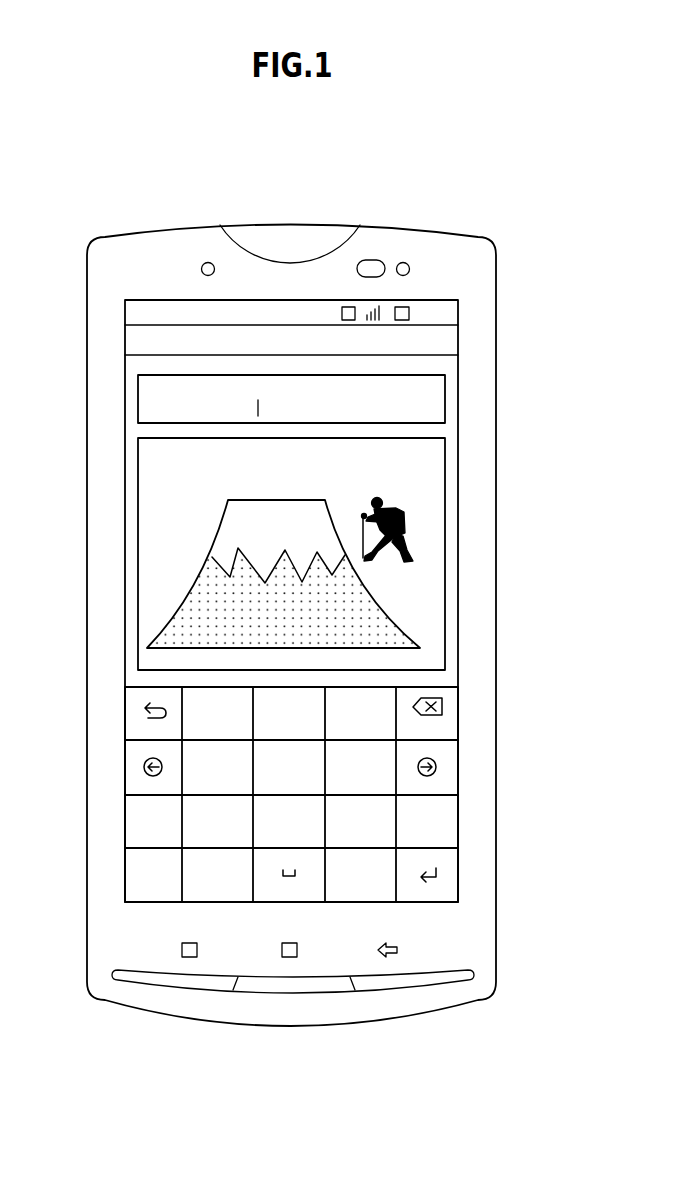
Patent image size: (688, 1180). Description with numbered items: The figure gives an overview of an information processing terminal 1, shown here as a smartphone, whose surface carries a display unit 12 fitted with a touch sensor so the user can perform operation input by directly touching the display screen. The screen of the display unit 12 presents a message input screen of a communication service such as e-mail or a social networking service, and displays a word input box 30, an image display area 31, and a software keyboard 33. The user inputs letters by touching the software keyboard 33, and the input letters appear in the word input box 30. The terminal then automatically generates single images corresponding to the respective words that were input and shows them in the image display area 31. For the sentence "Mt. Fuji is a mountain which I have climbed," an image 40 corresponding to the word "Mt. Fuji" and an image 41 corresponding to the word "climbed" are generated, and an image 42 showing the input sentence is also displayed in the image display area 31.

The information processing terminal 1 is at (462, 236).
The display unit 12 is at (458, 497).
The word input box 30 is at (445, 397).
The image display area 31 is at (445, 455).
The software keyboard 33 is at (465, 697).
The image 40 is at (393, 618).
The image 41 is at (408, 556).
The image 42 is at (175, 490).